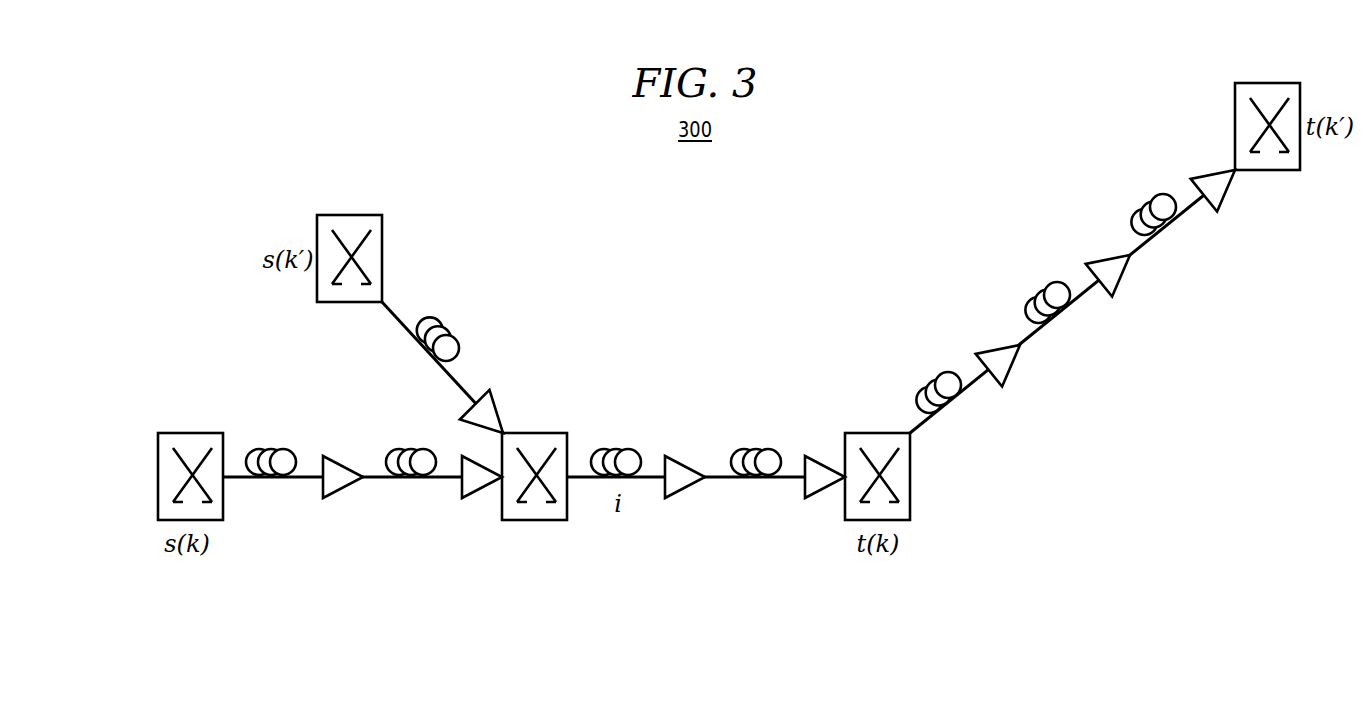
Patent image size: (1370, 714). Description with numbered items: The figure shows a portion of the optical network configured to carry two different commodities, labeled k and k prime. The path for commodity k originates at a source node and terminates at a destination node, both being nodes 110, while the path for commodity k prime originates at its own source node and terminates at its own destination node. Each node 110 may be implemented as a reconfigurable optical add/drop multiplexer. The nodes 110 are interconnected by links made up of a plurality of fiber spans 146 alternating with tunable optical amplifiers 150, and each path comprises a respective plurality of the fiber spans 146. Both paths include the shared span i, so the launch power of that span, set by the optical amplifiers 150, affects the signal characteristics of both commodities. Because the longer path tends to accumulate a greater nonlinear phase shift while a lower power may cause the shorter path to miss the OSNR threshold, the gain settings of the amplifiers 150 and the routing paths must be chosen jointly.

The node 110 is at (185, 433).
The fiber span 146 is at (263, 449).
The tunable optical amplifier 150 is at (350, 487).